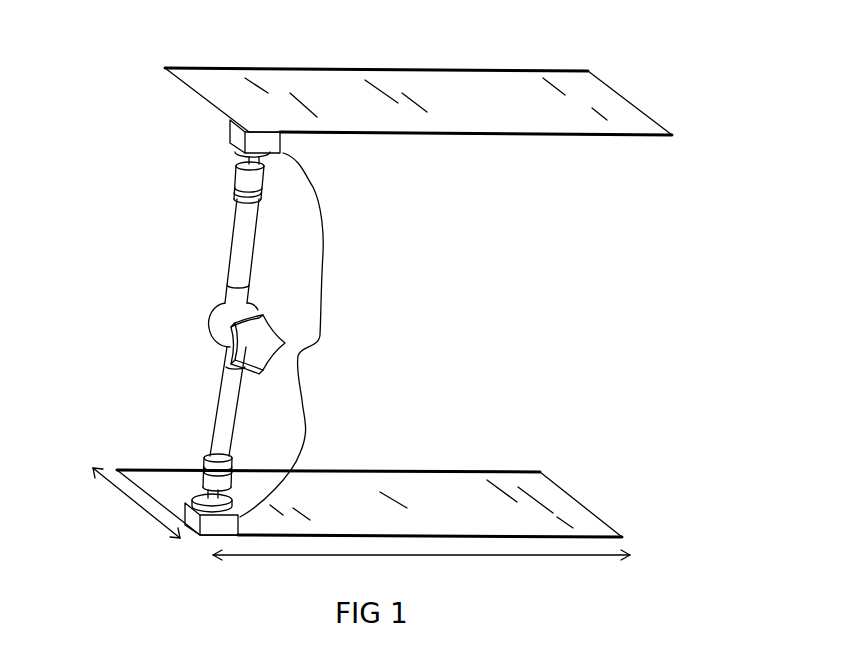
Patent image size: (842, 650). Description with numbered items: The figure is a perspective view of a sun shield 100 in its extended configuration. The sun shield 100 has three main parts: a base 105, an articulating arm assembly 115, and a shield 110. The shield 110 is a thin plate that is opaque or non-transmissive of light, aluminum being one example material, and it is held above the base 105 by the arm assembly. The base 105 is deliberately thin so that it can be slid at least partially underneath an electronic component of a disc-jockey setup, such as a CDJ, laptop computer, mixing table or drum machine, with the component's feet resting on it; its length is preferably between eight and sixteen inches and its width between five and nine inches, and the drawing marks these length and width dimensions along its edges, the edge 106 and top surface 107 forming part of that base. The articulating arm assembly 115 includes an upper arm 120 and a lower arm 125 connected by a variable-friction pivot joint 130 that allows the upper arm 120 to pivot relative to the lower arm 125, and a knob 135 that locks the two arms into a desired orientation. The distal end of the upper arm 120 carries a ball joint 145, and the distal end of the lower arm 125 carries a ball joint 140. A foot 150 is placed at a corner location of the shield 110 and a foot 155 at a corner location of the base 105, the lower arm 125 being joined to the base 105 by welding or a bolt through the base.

The sun shield 100 is at (818, 67).
The base 105 is at (398, 480).
The base platform edge 106 is at (592, 508).
The base platform top surface 107 is at (487, 472).
The shield 110 is at (615, 108).
The articulating arm assembly 115 is at (369, 338).
The upper arm 120 is at (230, 247).
The lower arm 125 is at (218, 407).
The variable-friction pivot joint 130 is at (197, 321).
The knob 135 is at (277, 307).
The ball joint 140 is at (199, 479).
The ball joint 145 is at (227, 180).
The foot 150 is at (233, 130).
The foot 155 is at (208, 526).